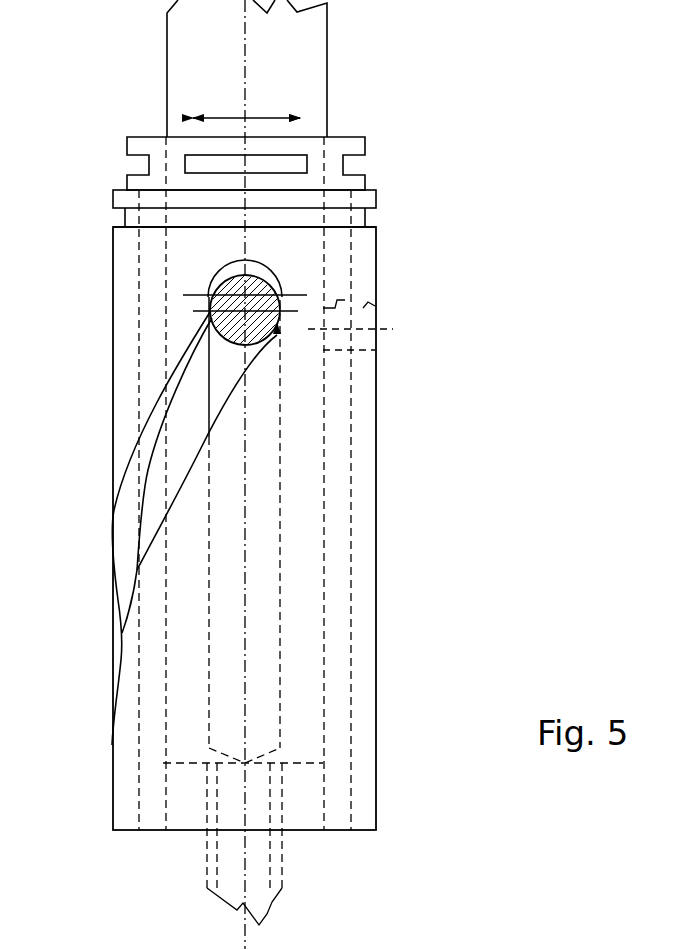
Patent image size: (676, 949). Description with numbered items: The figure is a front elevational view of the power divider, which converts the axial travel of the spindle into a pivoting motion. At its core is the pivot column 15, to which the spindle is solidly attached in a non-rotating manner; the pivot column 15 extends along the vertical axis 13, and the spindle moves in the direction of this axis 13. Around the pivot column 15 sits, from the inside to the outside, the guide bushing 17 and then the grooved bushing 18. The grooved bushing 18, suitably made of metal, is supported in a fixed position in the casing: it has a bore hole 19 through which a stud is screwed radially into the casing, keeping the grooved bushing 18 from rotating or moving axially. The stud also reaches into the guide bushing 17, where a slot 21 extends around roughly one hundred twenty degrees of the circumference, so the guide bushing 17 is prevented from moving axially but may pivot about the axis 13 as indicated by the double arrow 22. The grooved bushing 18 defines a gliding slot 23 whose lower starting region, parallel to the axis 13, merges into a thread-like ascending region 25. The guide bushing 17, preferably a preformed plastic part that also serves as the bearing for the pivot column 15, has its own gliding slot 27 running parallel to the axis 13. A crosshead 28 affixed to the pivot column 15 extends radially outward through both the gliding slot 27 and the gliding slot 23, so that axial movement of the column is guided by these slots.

The axis 13 is at (245, 569).
The pivot column 15 is at (295, 79).
The guide bushing 17 is at (334, 152).
The grooved bushing 18 is at (363, 433).
The bore hole 19 is at (368, 303).
The slot 21 is at (345, 300).
The double arrow 22 is at (233, 117).
The gliding slot 23 is at (143, 463).
The ascending region 25 is at (145, 437).
The gliding slot 27 is at (240, 368).
The crosshead 28 is at (282, 297).